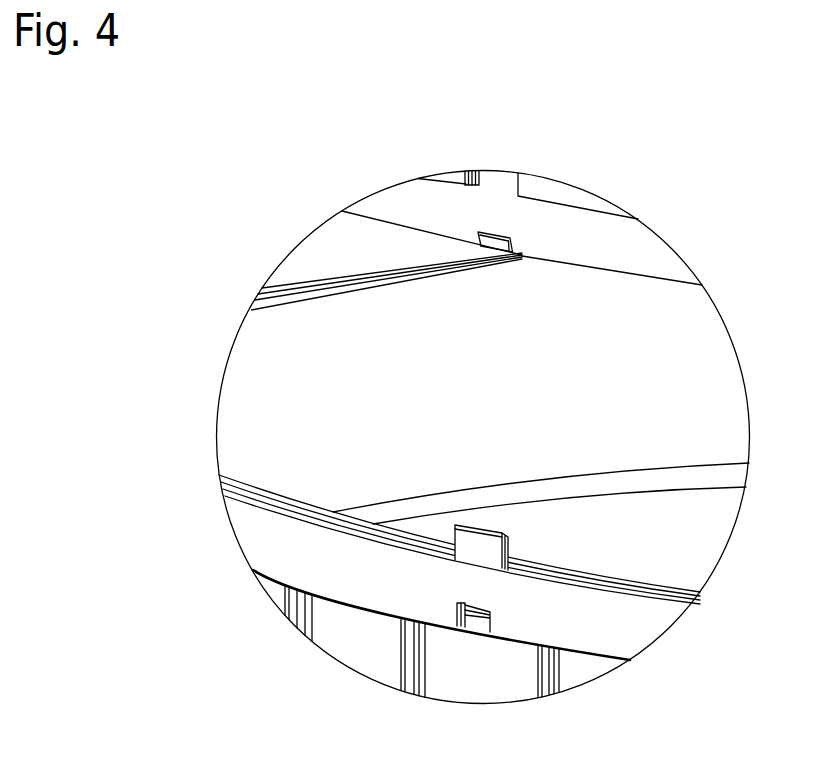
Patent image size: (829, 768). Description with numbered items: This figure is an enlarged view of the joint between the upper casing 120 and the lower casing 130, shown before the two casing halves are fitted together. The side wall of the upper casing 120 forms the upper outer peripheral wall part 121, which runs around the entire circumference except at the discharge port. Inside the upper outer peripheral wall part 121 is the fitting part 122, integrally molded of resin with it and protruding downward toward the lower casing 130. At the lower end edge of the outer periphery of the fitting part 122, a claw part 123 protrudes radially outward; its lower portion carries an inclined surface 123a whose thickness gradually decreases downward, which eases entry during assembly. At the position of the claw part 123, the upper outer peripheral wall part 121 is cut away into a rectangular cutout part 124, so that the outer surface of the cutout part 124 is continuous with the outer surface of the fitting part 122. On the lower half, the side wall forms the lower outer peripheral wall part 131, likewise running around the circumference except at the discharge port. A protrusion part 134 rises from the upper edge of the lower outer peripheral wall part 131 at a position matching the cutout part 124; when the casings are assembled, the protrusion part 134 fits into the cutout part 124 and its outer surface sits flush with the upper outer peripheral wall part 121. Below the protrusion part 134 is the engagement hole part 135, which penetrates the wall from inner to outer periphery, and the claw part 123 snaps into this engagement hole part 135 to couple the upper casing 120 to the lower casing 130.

The upper casing 120 is at (528, 269).
The upper outer peripheral wall part 121 is at (453, 180).
The fitting part 122 is at (635, 260).
The claw part 123 is at (503, 231).
The inclined surface 123a is at (485, 243).
The cutout part 124 is at (504, 180).
The lower casing 130 is at (597, 565).
The lower outer peripheral wall part 131 is at (365, 593).
The protrusion part 134 is at (473, 545).
The engagement hole part 135 is at (483, 612).